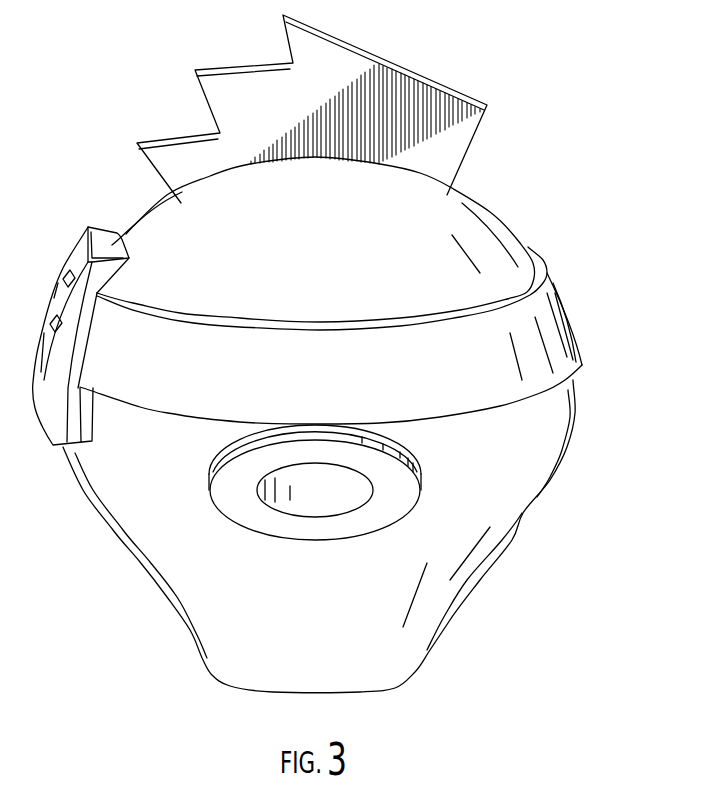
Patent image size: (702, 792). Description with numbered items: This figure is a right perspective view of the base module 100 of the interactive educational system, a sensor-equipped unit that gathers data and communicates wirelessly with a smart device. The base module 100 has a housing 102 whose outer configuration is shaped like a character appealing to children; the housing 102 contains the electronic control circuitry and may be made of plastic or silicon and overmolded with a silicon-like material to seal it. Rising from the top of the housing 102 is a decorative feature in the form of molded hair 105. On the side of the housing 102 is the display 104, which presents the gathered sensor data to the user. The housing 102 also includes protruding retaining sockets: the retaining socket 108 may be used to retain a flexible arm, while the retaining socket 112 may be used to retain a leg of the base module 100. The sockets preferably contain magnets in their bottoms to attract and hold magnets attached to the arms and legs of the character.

The base module 100 is at (538, 110).
The housing 102 is at (505, 222).
The display 104 is at (50, 303).
The molded hair 105 is at (231, 60).
The retaining socket 108 is at (296, 500).
The retaining socket 112 is at (263, 692).